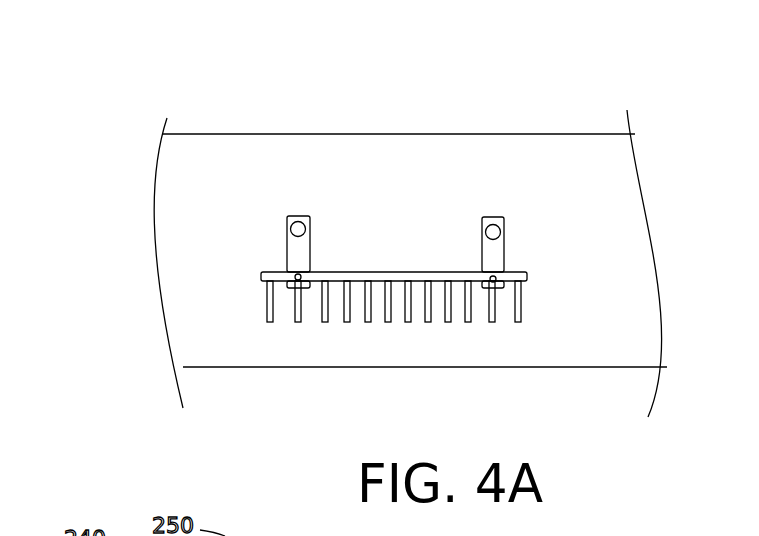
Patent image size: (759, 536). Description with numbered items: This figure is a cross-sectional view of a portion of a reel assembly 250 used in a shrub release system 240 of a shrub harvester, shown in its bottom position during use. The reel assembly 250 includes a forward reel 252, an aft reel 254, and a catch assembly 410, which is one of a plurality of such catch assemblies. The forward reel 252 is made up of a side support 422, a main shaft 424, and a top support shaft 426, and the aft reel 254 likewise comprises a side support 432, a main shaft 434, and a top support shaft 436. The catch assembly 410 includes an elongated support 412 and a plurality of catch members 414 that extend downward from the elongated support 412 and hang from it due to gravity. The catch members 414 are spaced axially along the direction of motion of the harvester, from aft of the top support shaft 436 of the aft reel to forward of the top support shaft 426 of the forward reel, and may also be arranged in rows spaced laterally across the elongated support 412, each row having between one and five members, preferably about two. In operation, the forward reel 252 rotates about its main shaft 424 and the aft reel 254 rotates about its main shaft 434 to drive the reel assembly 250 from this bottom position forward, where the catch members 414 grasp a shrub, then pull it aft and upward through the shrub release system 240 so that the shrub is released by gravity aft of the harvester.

The shrub release system 240 is at (270, 52).
The reel assembly 250 is at (212, 102).
The forward reel 252 is at (533, 220).
The aft reel 254 is at (252, 217).
The catch assembly 410 is at (460, 257).
The elongated support 412 is at (388, 277).
The catch members 414 is at (408, 322).
The side support 422 is at (488, 255).
The main shaft 424 is at (494, 226).
The top support shaft 426 is at (496, 282).
The side support 432 is at (297, 258).
The main shaft 434 is at (302, 223).
The top support shaft 436 is at (296, 280).